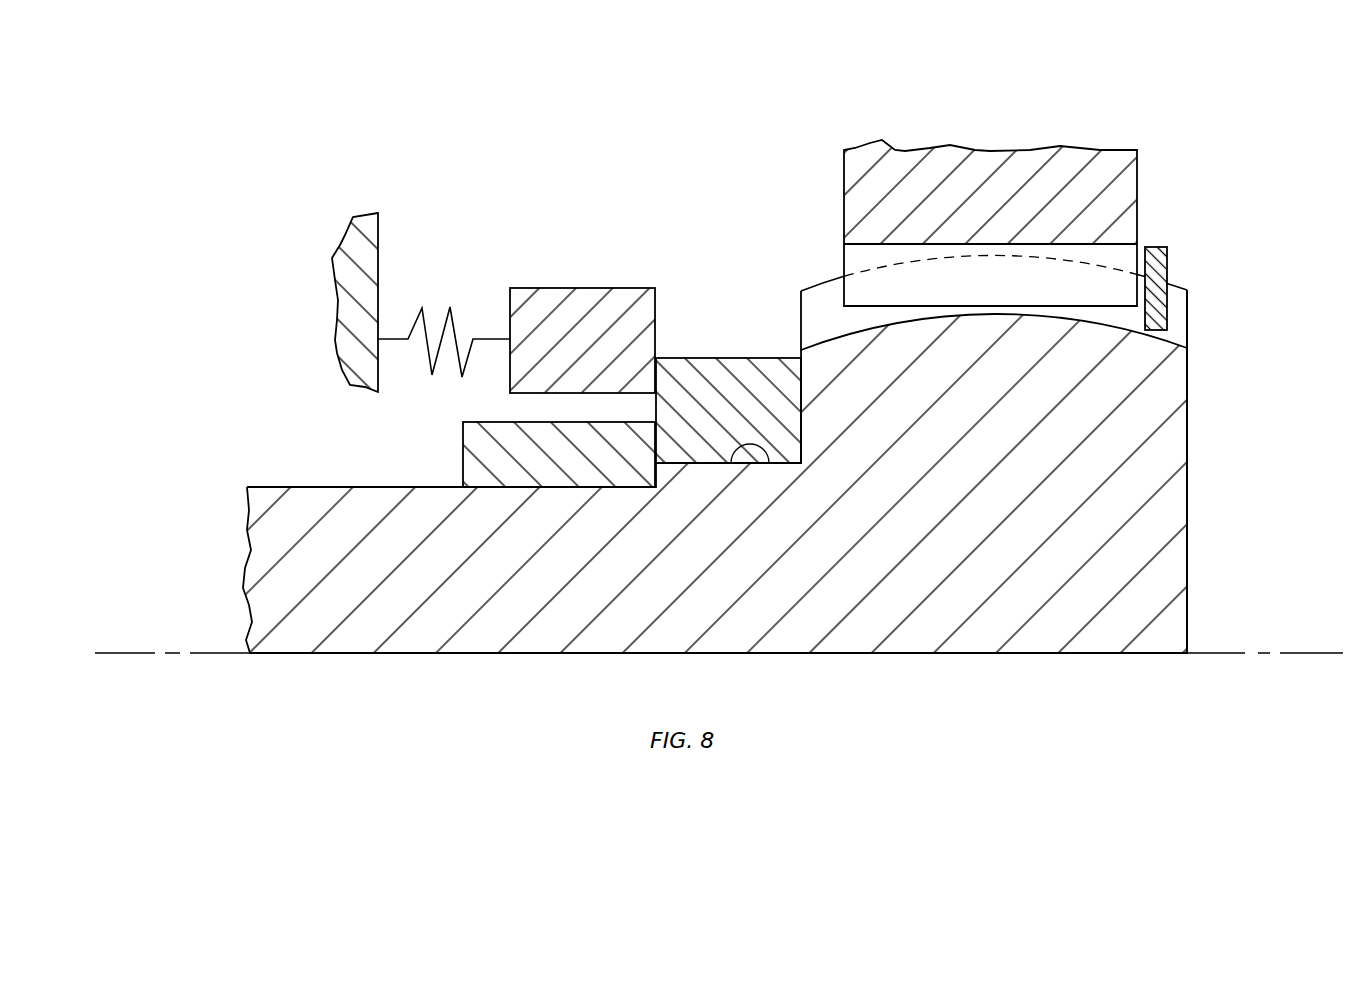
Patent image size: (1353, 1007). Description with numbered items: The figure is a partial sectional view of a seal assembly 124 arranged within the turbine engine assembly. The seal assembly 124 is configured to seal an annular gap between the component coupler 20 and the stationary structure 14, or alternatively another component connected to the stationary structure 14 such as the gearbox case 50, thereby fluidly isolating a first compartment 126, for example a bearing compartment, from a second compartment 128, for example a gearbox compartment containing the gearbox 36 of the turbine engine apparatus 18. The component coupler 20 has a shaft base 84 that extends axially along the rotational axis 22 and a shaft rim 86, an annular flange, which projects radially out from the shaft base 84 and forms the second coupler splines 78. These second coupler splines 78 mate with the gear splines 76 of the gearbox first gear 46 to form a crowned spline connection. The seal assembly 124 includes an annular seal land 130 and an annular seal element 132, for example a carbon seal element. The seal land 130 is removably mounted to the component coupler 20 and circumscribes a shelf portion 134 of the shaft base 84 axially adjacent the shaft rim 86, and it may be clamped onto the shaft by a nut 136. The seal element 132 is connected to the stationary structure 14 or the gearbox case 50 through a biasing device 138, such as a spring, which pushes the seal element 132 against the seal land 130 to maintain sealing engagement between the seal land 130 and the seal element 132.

The stationary structure 14 is at (257, 302).
The gearbox case 50 is at (303, 283).
The turbine engine apparatus 18 is at (1062, 187).
The gearbox 36 is at (1062, 187).
The component coupler 20 is at (701, 473).
The rotational axis 22 is at (1330, 650).
The gearbox first gear 46 is at (1138, 165).
The gear splines 76 is at (843, 295).
The second coupler splines 78 is at (1190, 322).
The shaft base 84 is at (345, 653).
The shaft rim 86 is at (1188, 385).
The seal assembly 124 is at (576, 325).
The first compartment 126 is at (277, 426).
The second compartment 128 is at (801, 121).
The seal land 130 is at (713, 358).
The seal element 132 is at (563, 287).
The shelf portion 134 is at (768, 463).
The nut 136 is at (463, 453).
The biasing device 138 is at (420, 310).